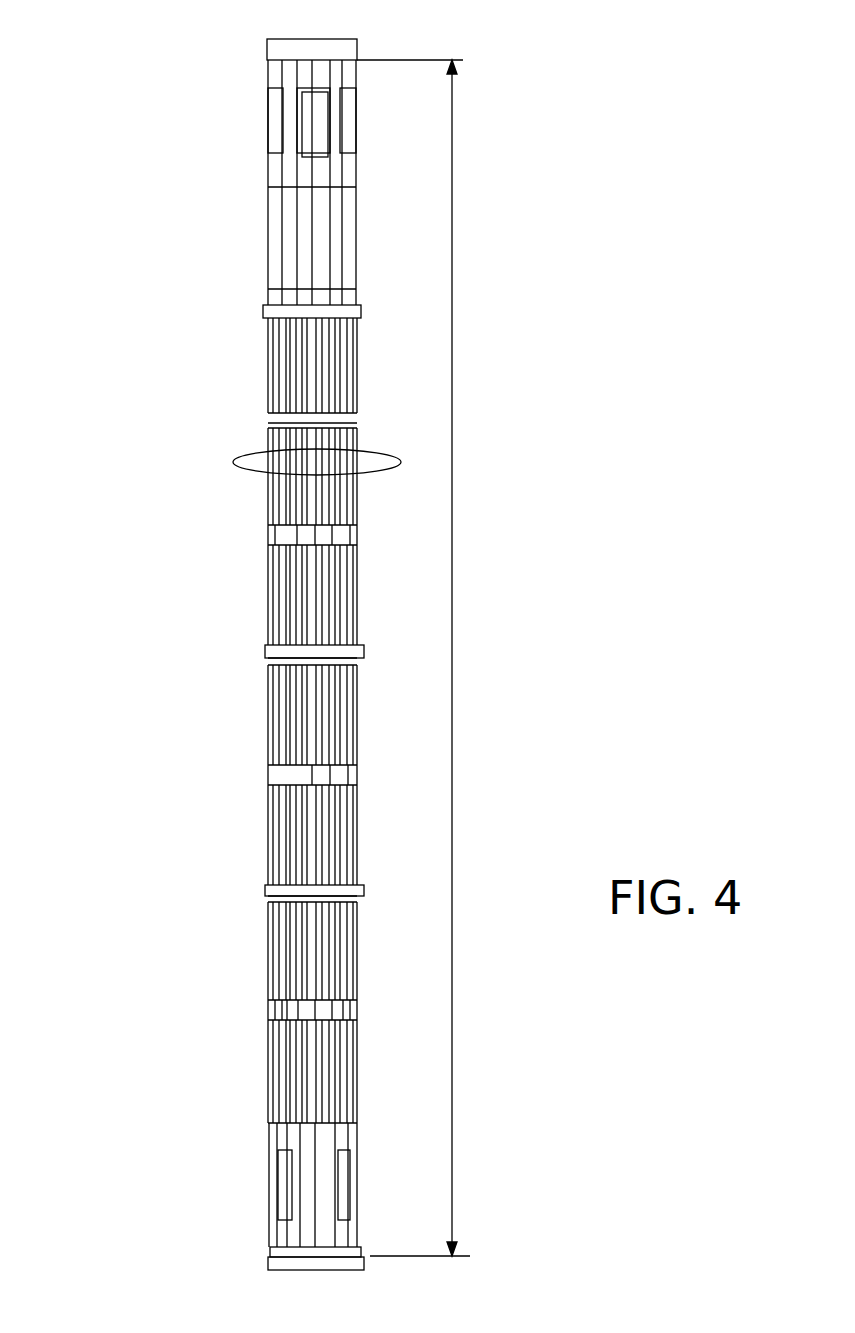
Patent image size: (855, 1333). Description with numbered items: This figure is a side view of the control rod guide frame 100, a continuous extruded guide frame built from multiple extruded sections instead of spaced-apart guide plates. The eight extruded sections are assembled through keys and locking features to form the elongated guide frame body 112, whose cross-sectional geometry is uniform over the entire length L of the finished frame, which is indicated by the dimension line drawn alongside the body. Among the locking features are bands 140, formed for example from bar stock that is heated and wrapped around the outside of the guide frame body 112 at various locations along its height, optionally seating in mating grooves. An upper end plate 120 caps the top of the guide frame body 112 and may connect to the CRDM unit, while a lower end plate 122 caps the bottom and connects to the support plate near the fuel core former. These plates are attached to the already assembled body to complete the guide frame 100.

The control rod guide frame 100 is at (162, 512).
The guide frame body 112 is at (232, 460).
The upper end plate 120 is at (268, 45).
The lower end plate 122 is at (268, 1257).
The bands 140 is at (268, 310).
The length L is at (452, 683).